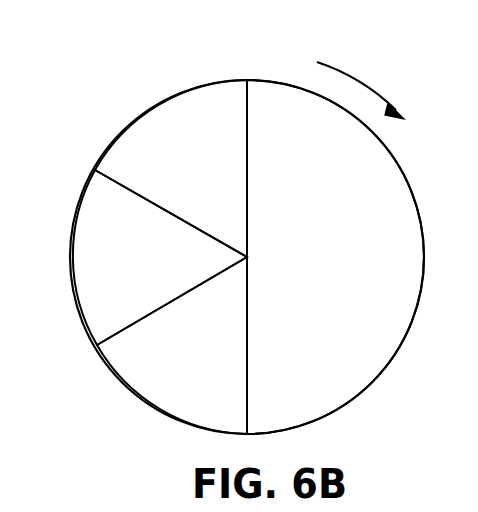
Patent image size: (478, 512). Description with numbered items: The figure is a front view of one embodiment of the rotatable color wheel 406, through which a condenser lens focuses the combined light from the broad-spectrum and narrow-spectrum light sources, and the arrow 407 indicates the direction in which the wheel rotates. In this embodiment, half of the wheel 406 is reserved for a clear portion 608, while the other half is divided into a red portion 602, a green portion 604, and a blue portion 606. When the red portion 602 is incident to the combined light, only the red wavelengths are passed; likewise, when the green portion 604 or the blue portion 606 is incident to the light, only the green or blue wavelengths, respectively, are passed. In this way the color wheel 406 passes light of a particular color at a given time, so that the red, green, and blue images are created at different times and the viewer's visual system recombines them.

The rotatable color wheel 406 is at (92, 382).
The arrow 407 is at (363, 75).
The red portion 602 is at (216, 202).
The green portion 604 is at (154, 300).
The blue portion 606 is at (218, 400).
The clear portion 608 is at (341, 306).